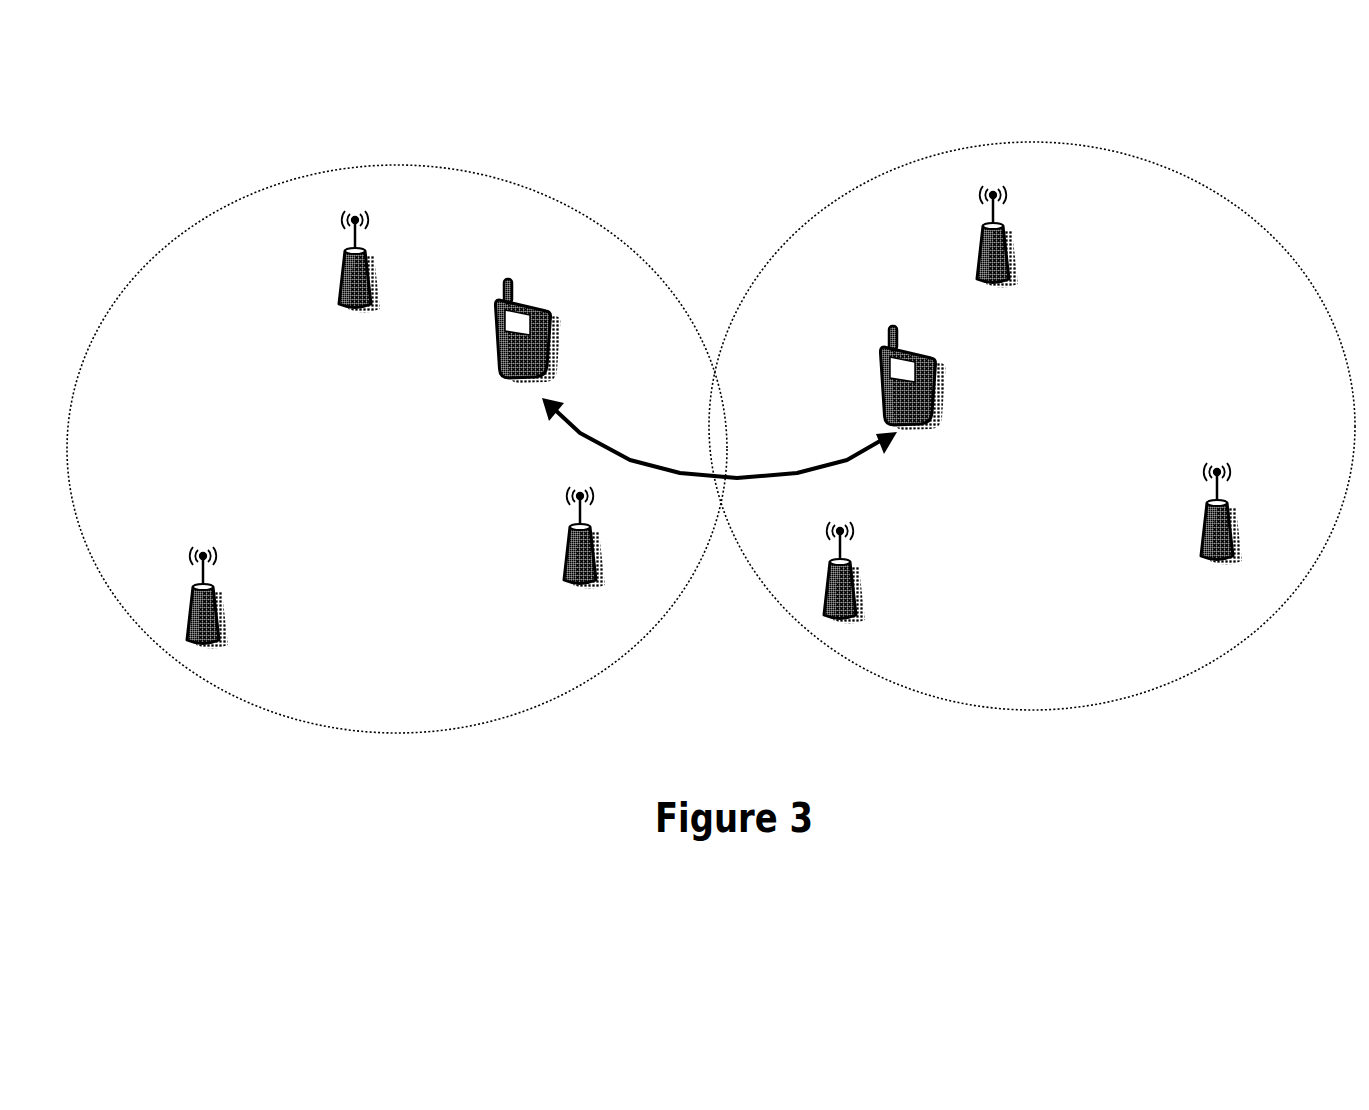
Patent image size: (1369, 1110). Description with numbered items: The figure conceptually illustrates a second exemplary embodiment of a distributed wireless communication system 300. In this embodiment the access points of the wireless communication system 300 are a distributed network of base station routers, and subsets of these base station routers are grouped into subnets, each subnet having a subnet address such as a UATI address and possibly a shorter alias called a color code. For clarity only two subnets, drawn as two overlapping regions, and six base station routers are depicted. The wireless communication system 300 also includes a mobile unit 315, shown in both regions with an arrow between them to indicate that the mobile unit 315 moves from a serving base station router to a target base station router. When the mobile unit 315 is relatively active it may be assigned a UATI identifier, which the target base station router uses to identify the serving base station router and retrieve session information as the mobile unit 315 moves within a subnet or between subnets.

The wireless communication system 300 is at (1207, 81).
The mobile unit 315 is at (545, 305).